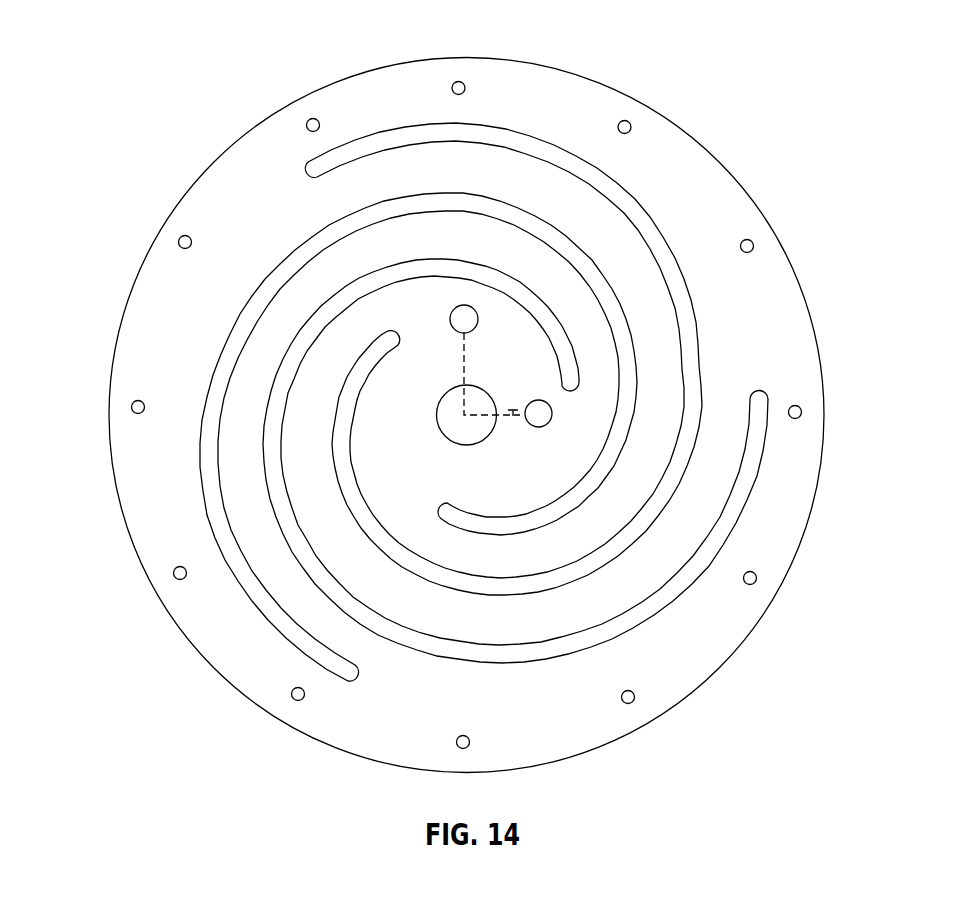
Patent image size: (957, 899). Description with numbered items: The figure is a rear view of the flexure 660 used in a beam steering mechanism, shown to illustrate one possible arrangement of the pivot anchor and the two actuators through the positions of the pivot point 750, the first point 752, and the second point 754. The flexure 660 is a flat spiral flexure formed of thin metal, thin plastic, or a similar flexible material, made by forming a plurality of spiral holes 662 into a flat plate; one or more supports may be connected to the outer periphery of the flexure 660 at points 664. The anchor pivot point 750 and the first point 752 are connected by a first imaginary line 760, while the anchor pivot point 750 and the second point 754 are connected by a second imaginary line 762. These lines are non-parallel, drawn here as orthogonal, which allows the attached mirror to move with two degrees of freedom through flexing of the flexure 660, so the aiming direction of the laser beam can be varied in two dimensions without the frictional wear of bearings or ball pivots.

The flexure 660 is at (752, 335).
The spiral holes 662 is at (385, 128).
The points 664 is at (753, 240).
The pivot point 750 is at (436, 412).
The first point 752 is at (552, 413).
The second point 754 is at (464, 305).
The first imaginary line 760 is at (513, 413).
The second imaginary line 762 is at (460, 363).